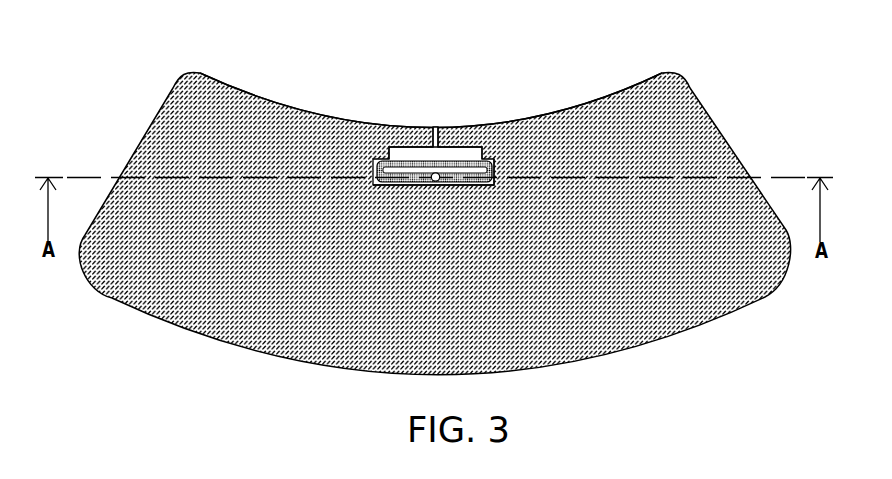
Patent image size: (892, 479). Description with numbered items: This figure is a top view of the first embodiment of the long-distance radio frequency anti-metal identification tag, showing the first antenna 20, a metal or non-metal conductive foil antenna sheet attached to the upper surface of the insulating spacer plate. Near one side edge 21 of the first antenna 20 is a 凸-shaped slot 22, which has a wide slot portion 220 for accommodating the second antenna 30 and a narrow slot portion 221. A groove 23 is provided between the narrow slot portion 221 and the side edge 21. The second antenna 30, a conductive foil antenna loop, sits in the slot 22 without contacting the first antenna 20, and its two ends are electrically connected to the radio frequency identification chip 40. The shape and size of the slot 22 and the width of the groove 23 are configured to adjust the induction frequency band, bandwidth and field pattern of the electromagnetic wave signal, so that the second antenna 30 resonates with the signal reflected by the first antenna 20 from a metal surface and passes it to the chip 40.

The first antenna 20 is at (205, 303).
The side edge 21 is at (335, 117).
The slot 22 is at (400, 160).
The groove 23 is at (435, 127).
The second antenna 30 is at (418, 162).
The radio frequency identification chip 40 is at (436, 172).
The wide slot portion 220 is at (496, 180).
The narrow slot portion 221 is at (469, 156).